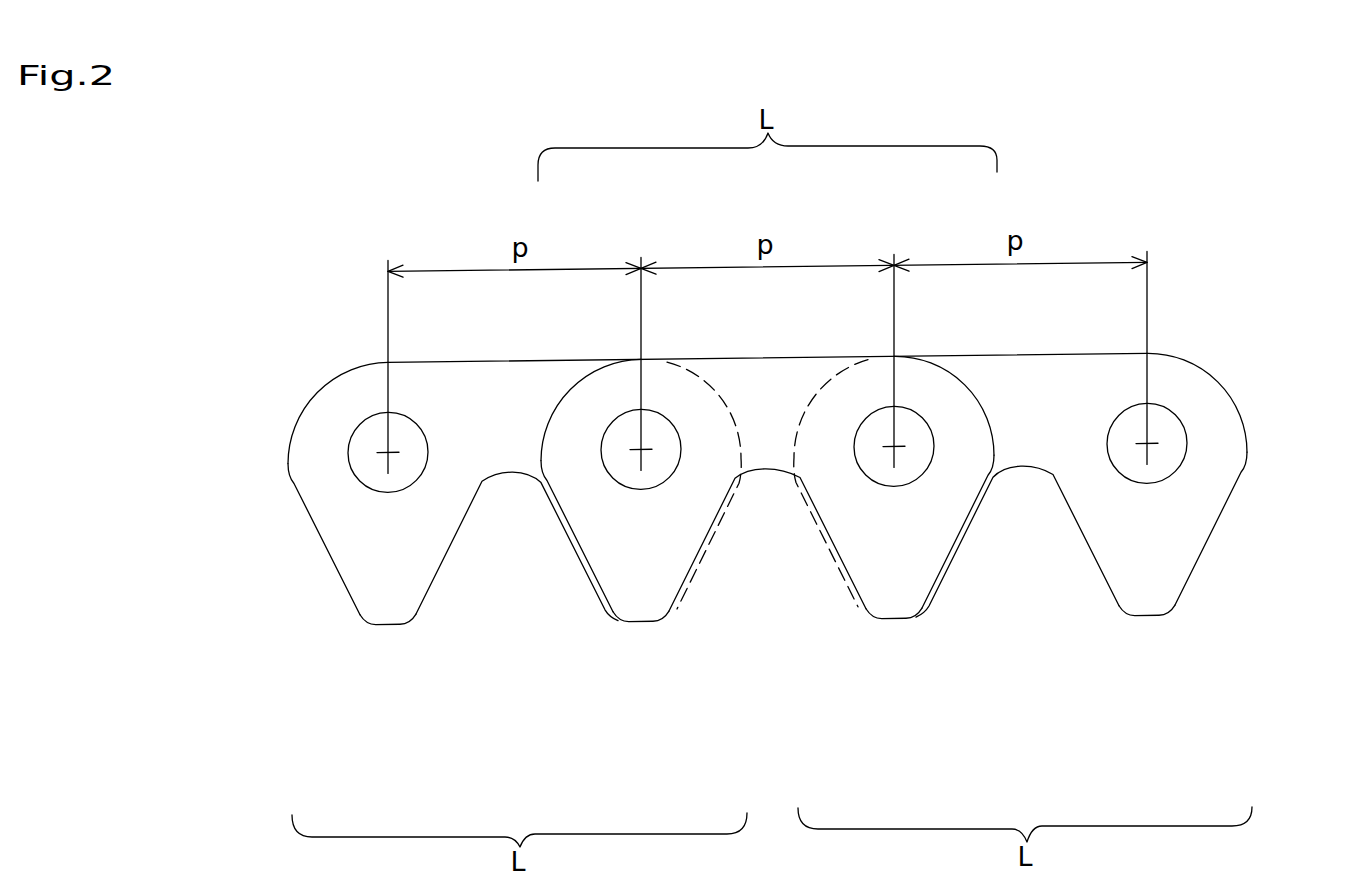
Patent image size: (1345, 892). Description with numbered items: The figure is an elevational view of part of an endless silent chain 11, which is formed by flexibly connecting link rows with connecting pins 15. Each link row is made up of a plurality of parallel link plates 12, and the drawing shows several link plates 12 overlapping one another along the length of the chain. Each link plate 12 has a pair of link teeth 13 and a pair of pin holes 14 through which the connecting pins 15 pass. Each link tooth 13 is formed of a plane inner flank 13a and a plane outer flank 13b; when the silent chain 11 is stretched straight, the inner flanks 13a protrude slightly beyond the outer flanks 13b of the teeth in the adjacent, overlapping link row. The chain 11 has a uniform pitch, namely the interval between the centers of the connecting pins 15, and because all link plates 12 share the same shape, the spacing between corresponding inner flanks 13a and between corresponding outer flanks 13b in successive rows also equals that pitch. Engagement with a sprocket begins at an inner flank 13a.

The silent chain 11 is at (1218, 262).
The link plate 12 is at (469, 380).
The link tooth 13 is at (388, 603).
The inner flank 13a is at (437, 583).
The outer flank 13b is at (347, 590).
The pin hole 14 is at (357, 427).
The connecting pin 15 is at (618, 427).